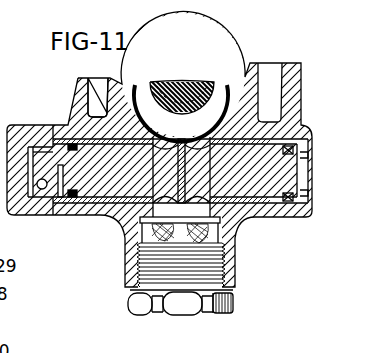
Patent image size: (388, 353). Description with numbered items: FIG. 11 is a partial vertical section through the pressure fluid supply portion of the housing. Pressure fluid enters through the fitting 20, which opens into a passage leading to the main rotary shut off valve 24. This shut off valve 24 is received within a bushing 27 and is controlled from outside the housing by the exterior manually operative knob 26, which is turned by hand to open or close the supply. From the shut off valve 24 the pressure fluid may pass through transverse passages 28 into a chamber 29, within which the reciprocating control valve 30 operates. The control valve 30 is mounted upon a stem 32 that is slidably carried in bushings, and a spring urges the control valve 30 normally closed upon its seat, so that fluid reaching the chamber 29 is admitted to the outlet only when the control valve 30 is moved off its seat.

The fitting 20 is at (130, 303).
The main rotary shut off valve 24 is at (265, 187).
The exterior manually operative knob 26 is at (26, 216).
The bushing 27 is at (95, 216).
The transverse passages 28 is at (195, 170).
The chamber 29 is at (234, 80).
The reciprocating control valve 30 is at (190, 74).
The stem 32 is at (182, 81).